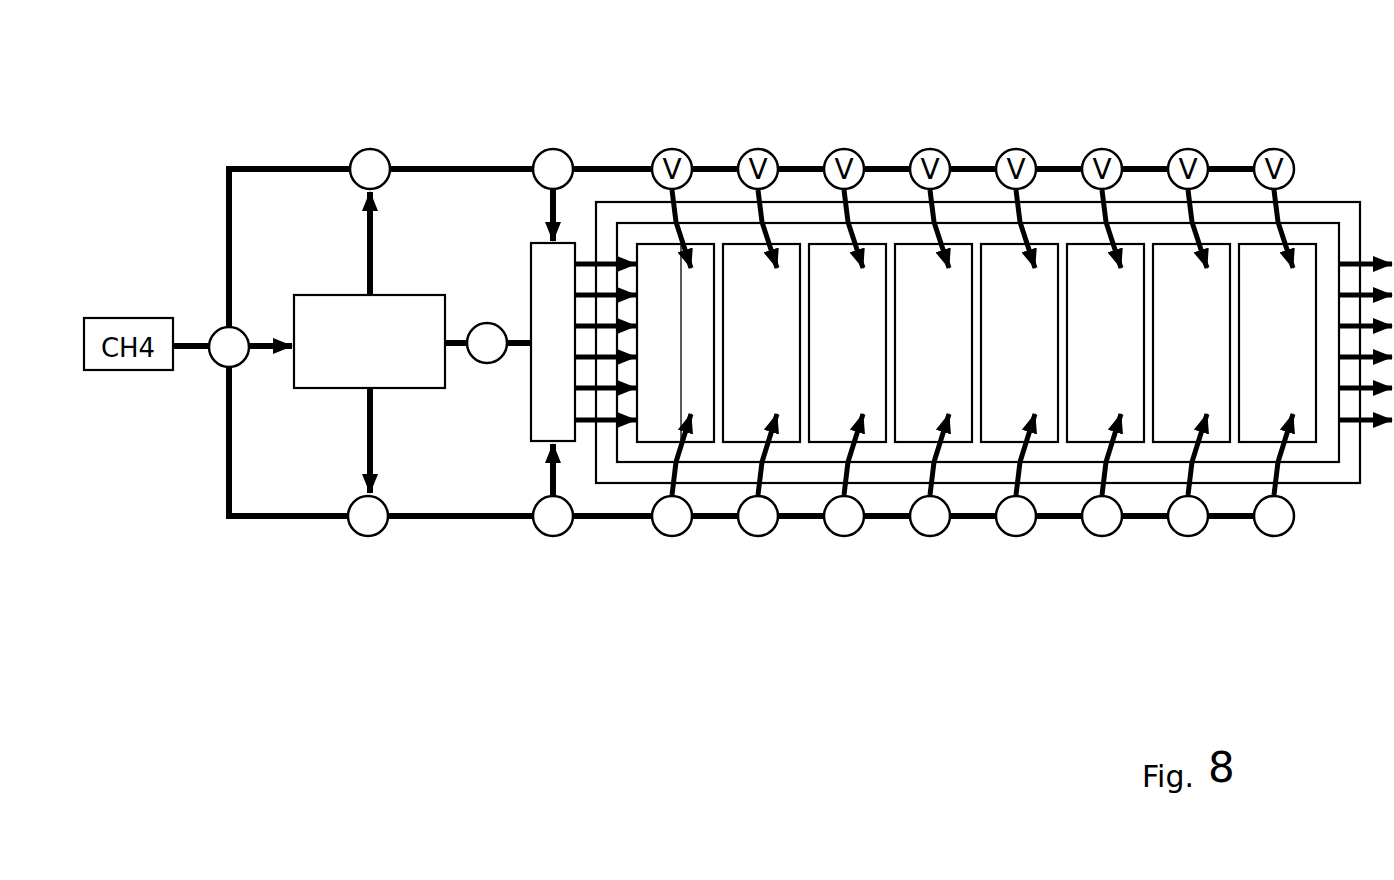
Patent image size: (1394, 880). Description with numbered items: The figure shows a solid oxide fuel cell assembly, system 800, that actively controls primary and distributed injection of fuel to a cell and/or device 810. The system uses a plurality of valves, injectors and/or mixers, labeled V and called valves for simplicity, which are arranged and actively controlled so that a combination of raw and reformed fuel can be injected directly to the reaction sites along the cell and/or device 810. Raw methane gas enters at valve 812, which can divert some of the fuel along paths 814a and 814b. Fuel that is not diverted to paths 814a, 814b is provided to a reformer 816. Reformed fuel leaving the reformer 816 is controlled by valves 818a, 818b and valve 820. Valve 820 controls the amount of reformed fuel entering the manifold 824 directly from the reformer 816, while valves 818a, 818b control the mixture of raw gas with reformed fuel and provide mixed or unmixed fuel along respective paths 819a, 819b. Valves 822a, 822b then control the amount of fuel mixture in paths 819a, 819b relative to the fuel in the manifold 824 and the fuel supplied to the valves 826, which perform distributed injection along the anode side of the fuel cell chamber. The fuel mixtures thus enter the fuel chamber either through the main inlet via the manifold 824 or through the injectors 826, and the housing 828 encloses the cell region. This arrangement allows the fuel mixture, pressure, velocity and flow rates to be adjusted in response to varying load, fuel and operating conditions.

The system 800 is at (872, 46).
The cell and/or device 810 is at (726, 236).
The valve 812 is at (218, 332).
The path 814a is at (296, 165).
The path 814b is at (225, 448).
The reformer 816 is at (388, 297).
The valve 818a is at (385, 152).
The valve 818b is at (385, 530).
The path 819a is at (432, 176).
The path 819b is at (442, 512).
The valve 820 is at (470, 330).
The valve 822a is at (556, 148).
The valve 822b is at (562, 534).
The manifold 824 is at (530, 400).
The valves 826 is at (843, 537).
The stack housing 828 is at (1348, 206).